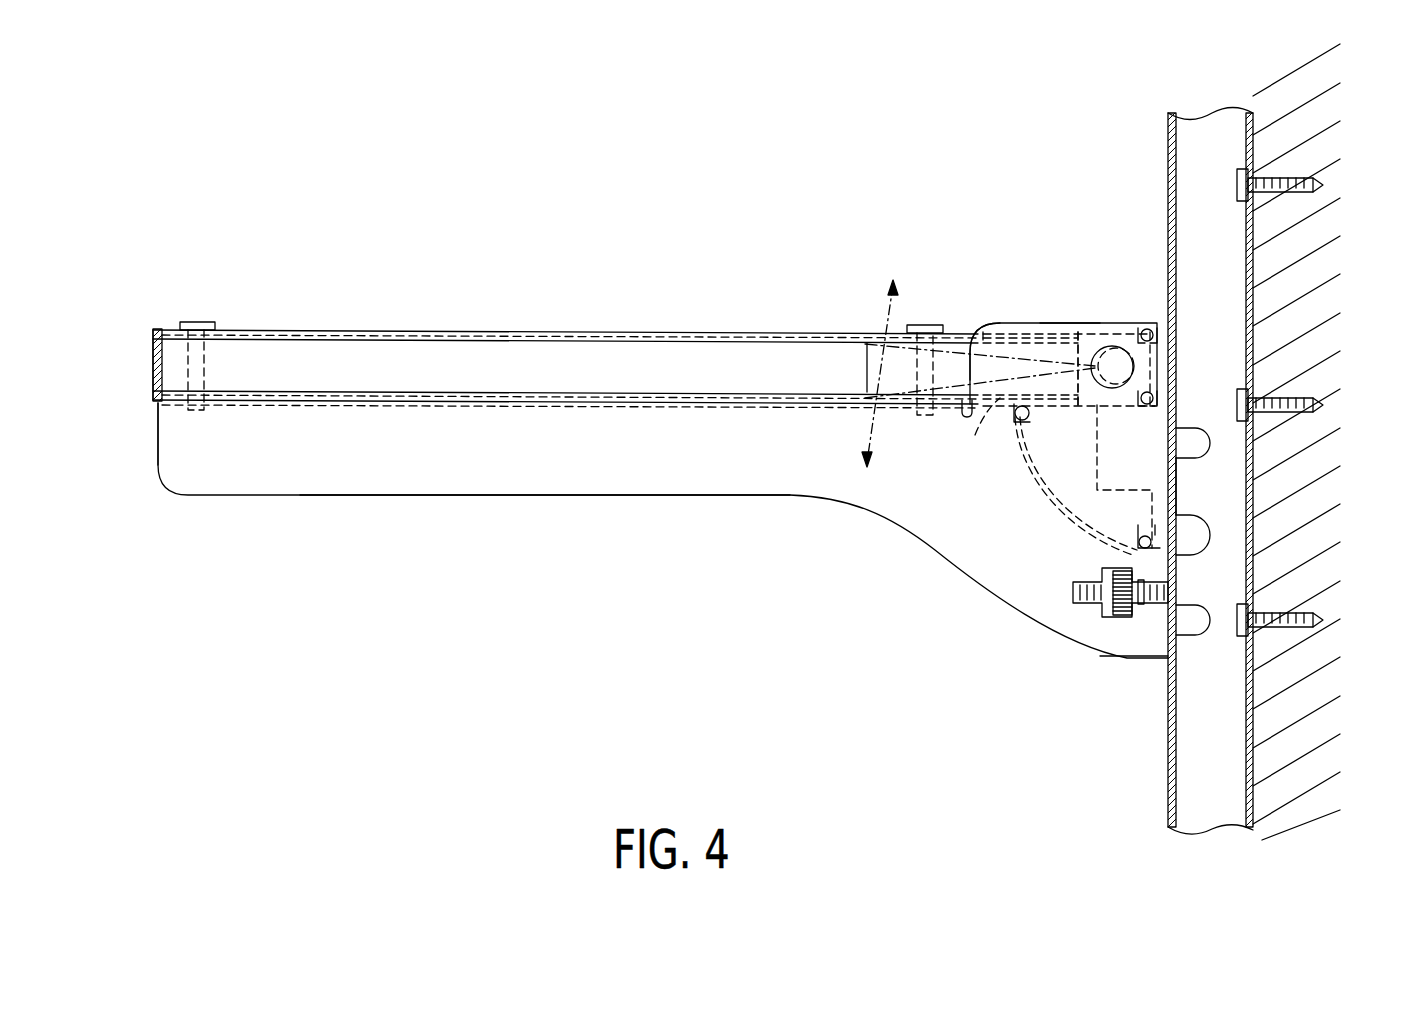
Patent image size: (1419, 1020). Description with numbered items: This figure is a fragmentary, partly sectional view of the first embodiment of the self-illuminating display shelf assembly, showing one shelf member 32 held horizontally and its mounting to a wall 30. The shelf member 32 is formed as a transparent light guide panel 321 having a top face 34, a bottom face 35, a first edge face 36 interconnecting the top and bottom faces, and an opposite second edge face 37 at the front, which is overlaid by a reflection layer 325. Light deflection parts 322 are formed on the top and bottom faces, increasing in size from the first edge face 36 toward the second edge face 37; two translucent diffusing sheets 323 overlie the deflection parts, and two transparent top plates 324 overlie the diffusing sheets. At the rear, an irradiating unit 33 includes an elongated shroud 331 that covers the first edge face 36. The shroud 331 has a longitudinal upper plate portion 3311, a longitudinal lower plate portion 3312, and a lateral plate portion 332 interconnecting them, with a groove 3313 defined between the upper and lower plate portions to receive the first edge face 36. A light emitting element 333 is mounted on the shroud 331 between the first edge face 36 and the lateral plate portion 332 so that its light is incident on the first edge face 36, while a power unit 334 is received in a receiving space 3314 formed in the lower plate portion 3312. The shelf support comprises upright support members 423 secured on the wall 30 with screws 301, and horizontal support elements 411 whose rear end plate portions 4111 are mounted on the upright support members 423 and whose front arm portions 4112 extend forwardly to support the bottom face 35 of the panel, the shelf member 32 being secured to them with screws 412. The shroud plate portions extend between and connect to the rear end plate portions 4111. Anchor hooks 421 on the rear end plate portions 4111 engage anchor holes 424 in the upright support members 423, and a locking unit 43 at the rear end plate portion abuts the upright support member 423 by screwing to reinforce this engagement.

The wall 30 is at (1303, 150).
The screws 301 is at (1300, 195).
The shelf member 32 is at (654, 338).
The light guide panel 321 is at (343, 333).
The light deflection parts 322 is at (280, 332).
The translucent diffusing sheets 323 is at (480, 334).
The transparent top plates 324 is at (548, 333).
The reflection layer 325 is at (150, 340).
The irradiating unit 33 is at (1032, 320).
The shroud 331 is at (1040, 462).
The lateral plate portion 332 is at (1157, 332).
The light emitting element 333 is at (1080, 325).
The power unit 334 is at (1085, 468).
The upper plate portion 3311 is at (1058, 325).
The lower plate portion 3312 is at (1020, 500).
The groove 3313 is at (1000, 327).
The receiving space 3314 is at (1000, 475).
The top face 34 is at (795, 333).
The bottom face 35 is at (770, 405).
The first edge face 36 is at (1090, 370).
The second edge face 37 is at (163, 408).
The horizontal support elements 411 is at (692, 497).
The rear end plate portions 4111 is at (1130, 652).
The front arm portions 4112 is at (618, 485).
The screws 412 is at (193, 322).
The anchor hooks 421 is at (1200, 445).
The upright support members 423 is at (1170, 190).
The anchor holes 424 is at (1180, 510).
The locking units 43 is at (1110, 622).